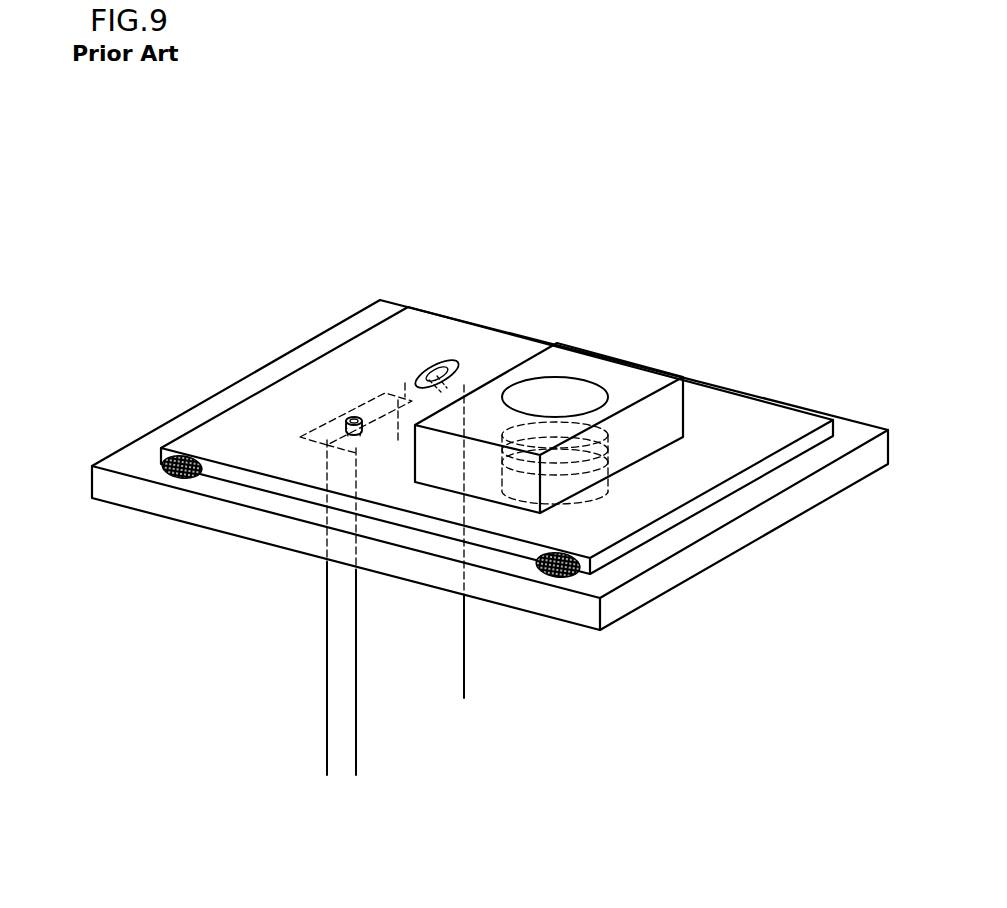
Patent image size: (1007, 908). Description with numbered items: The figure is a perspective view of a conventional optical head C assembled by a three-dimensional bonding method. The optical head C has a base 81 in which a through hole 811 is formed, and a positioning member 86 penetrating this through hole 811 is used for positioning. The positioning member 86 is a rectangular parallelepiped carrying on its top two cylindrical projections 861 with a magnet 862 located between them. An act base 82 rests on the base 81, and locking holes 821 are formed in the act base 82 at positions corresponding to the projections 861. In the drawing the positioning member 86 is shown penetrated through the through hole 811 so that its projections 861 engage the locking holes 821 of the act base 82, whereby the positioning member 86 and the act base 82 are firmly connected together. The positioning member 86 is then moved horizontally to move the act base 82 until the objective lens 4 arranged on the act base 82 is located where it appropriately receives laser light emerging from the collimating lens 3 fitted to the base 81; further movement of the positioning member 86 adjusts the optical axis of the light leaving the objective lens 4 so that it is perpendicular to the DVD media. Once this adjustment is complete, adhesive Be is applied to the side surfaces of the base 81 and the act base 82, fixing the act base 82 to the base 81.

The base 81 is at (125, 460).
The through hole 811 is at (327, 437).
The act base 82 is at (500, 342).
The locking holes 821 is at (347, 423).
The projections 861 is at (350, 418).
The magnet 862 is at (385, 393).
The positioning member 86 is at (342, 677).
The objective lens 4 is at (563, 400).
The collimating lens 3 is at (640, 455).
The adhesive Be is at (175, 478).
The optical head C is at (378, 217).